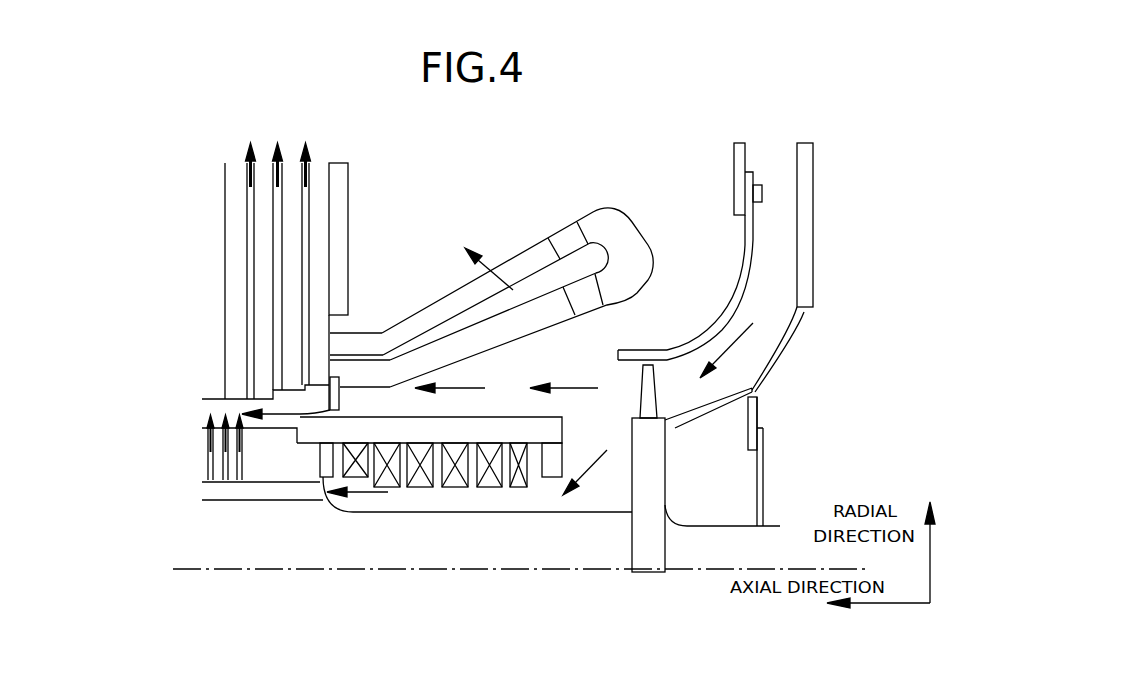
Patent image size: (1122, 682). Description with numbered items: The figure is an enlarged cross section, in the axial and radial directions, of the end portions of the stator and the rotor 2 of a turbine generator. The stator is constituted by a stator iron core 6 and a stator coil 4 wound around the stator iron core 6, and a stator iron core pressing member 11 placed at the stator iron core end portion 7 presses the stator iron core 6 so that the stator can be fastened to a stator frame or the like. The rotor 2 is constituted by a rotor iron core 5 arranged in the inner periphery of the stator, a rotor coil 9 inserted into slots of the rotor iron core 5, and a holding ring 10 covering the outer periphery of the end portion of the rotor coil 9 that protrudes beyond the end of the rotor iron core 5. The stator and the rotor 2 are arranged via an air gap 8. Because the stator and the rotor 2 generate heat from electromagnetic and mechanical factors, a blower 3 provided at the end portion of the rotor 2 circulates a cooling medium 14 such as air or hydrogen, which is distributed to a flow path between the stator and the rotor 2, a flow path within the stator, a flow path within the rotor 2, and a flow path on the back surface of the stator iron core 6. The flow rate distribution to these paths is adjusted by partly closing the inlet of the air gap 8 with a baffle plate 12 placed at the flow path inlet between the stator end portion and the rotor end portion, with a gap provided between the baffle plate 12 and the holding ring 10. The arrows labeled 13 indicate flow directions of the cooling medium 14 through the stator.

The rotor 2 is at (218, 553).
The blower 3 is at (641, 397).
The stator coil 4 is at (528, 262).
The rotor iron core 5 is at (270, 475).
The stator iron core 6 is at (260, 263).
The stator iron core end portion 7 is at (318, 202).
The air gap 8 is at (312, 397).
The rotor coil 9 is at (518, 490).
The holding ring 10 is at (492, 416).
The stator iron core pressing member 11 is at (337, 243).
The baffle plate 12 is at (335, 375).
The cooling holes 13 is at (250, 208).
The cooling medium 14 is at (773, 205).